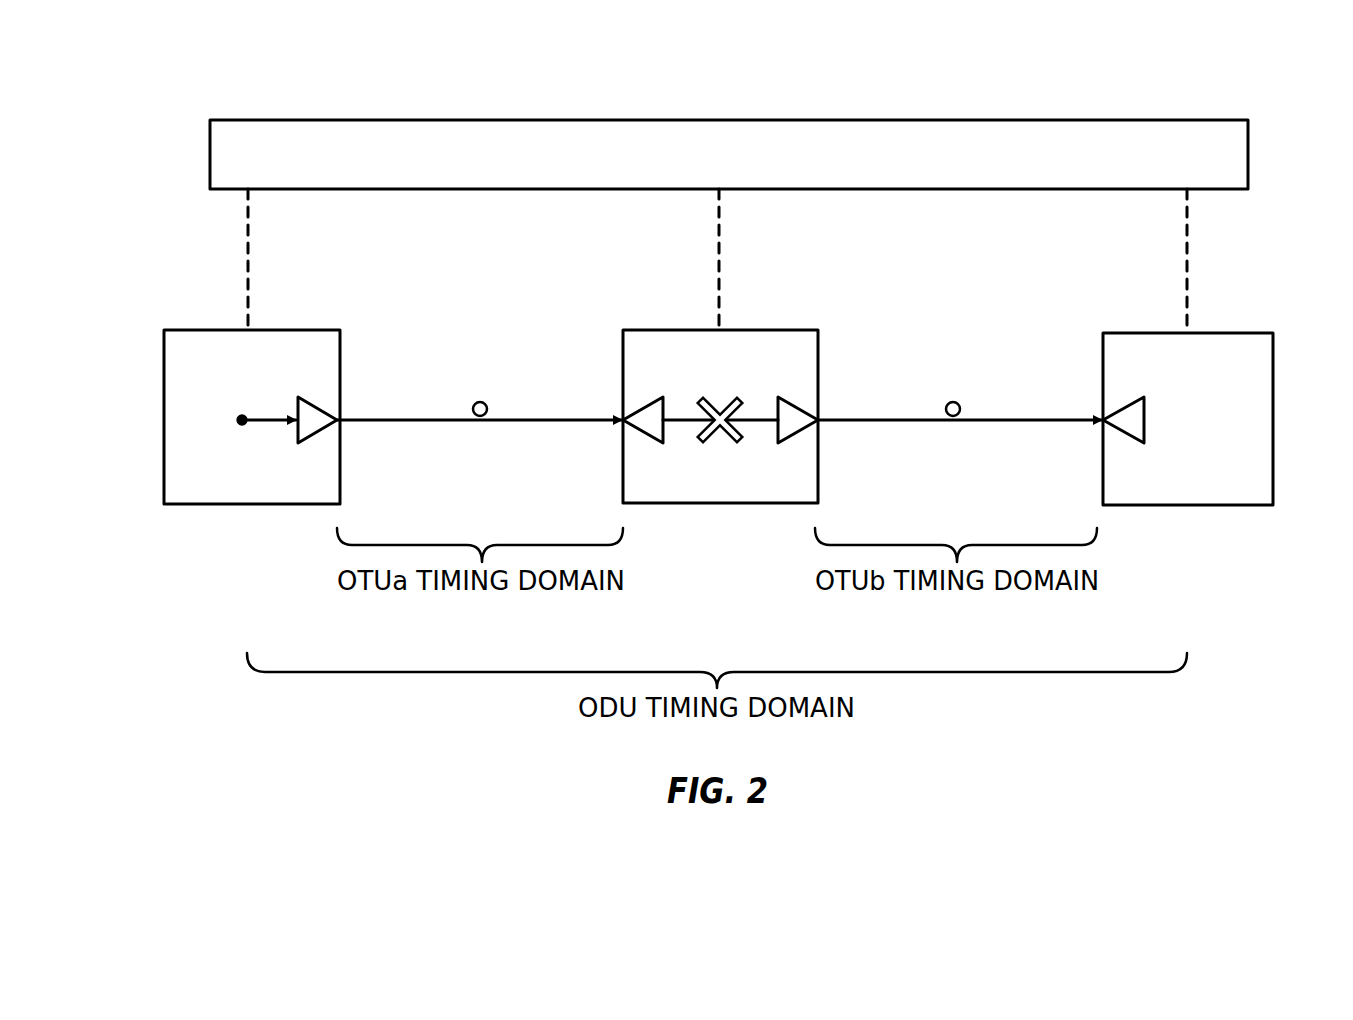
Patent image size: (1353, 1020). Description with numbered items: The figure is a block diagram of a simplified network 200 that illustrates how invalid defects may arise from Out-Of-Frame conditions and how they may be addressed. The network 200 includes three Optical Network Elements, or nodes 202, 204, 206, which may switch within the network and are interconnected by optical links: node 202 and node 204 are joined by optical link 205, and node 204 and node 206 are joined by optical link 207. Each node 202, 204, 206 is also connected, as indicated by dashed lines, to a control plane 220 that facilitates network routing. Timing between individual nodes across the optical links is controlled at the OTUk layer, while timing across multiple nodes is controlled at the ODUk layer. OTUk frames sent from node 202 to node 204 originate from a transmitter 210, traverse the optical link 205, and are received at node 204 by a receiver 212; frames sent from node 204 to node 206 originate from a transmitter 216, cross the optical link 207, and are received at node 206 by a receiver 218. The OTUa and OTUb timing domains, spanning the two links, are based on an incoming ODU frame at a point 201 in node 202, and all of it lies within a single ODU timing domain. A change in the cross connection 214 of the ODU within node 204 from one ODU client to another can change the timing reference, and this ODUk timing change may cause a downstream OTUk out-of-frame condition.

The network 200 is at (128, 97).
The point 201 is at (241, 426).
The node 202 is at (289, 330).
The node 204 is at (758, 330).
The optical link 205 is at (479, 418).
The node 206 is at (1237, 333).
The optical link 207 is at (952, 418).
The transmitter 210 is at (300, 400).
The receiver 212 is at (663, 397).
The cross connection 214 is at (720, 438).
The transmitter 216 is at (779, 397).
The receiver 218 is at (1145, 402).
The control plane 220 is at (742, 120).